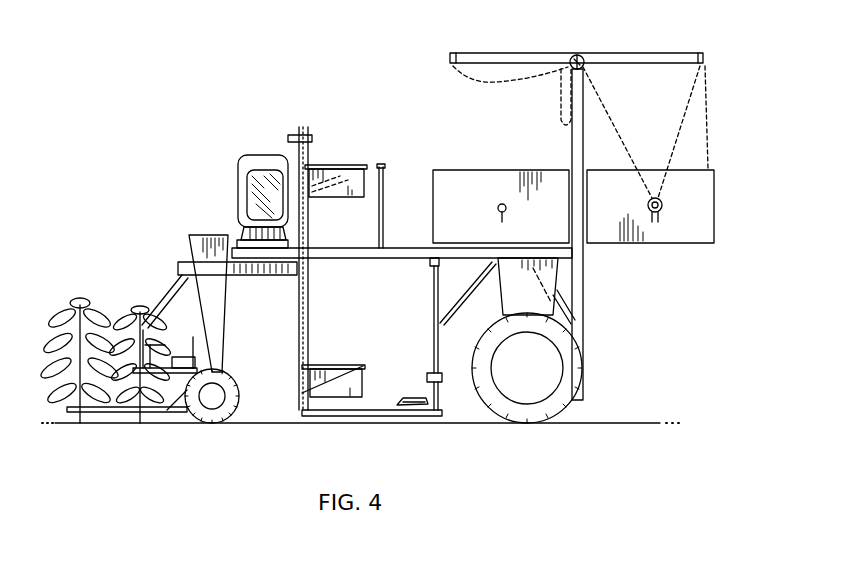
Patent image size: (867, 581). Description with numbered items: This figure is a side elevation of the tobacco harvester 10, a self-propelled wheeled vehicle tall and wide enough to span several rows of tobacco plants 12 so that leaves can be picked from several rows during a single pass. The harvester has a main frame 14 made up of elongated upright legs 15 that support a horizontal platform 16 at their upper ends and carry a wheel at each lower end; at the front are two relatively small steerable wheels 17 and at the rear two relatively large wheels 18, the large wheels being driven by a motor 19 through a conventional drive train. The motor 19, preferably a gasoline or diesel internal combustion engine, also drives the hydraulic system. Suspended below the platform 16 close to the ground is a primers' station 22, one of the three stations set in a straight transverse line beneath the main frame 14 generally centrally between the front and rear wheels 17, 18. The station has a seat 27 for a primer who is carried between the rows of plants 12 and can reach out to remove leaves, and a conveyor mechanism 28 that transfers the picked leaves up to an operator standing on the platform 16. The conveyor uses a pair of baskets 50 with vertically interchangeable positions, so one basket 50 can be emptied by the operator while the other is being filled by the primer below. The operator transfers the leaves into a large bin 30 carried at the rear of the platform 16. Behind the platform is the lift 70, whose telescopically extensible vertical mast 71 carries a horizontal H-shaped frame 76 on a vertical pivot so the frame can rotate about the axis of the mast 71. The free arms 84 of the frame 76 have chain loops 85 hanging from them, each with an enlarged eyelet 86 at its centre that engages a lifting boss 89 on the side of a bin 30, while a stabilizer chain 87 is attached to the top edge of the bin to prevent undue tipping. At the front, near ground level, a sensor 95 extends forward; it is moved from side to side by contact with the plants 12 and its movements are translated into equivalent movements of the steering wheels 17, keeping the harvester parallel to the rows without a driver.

The harvester 10 is at (230, 134).
The tobacco plants 12 is at (55, 365).
The main frame 14 is at (420, 247).
The upright legs 15 is at (215, 335).
The horizontal platform 16 is at (348, 248).
The small wheels 17 is at (238, 403).
The large wheels 18 is at (517, 385).
The motor 19 is at (268, 155).
The primers' station 22 is at (398, 340).
The seat 27 is at (420, 398).
The conveyor mechanism 28 is at (310, 303).
The bin 30 is at (487, 170).
The basket 50 is at (358, 165).
The lift 70 is at (590, 40).
The vertical mast 71 is at (583, 292).
The H-shaped frame 76 is at (676, 53).
The free arms 84 is at (455, 53).
The chain loops 85 is at (500, 80).
The enlarged eyelet 86 is at (661, 202).
The stabilizer chain 87 is at (710, 133).
The lifting boss 89 is at (498, 210).
The sensor 95 is at (105, 413).